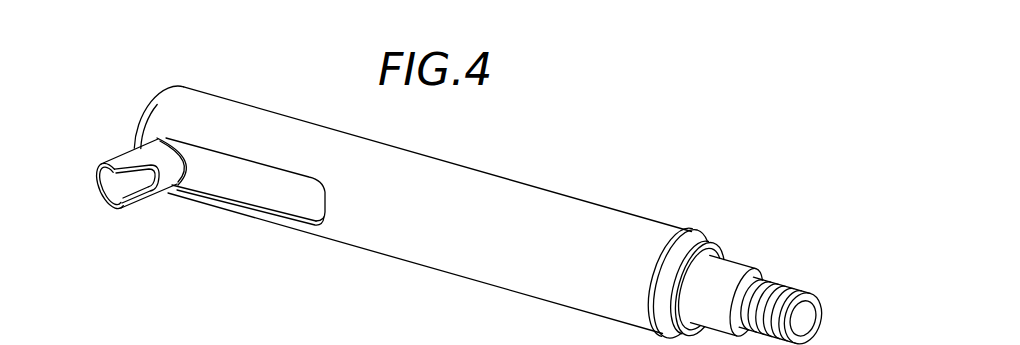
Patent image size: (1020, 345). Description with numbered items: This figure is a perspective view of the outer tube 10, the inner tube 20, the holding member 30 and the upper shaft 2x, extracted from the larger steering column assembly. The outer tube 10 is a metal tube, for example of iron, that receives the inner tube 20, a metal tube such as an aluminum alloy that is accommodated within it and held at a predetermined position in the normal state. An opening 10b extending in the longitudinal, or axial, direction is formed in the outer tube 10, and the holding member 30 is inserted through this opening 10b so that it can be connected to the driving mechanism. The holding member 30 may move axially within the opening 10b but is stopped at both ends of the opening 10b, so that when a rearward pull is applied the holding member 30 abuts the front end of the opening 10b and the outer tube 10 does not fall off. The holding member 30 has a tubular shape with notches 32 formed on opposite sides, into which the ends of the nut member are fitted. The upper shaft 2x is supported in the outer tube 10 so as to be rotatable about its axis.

The outer tube 10 is at (485, 272).
The opening 10b is at (300, 220).
The inner tube 20 is at (265, 198).
The holding member 30 is at (120, 150).
The notch 32 is at (107, 191).
The upper shaft 2x is at (765, 280).